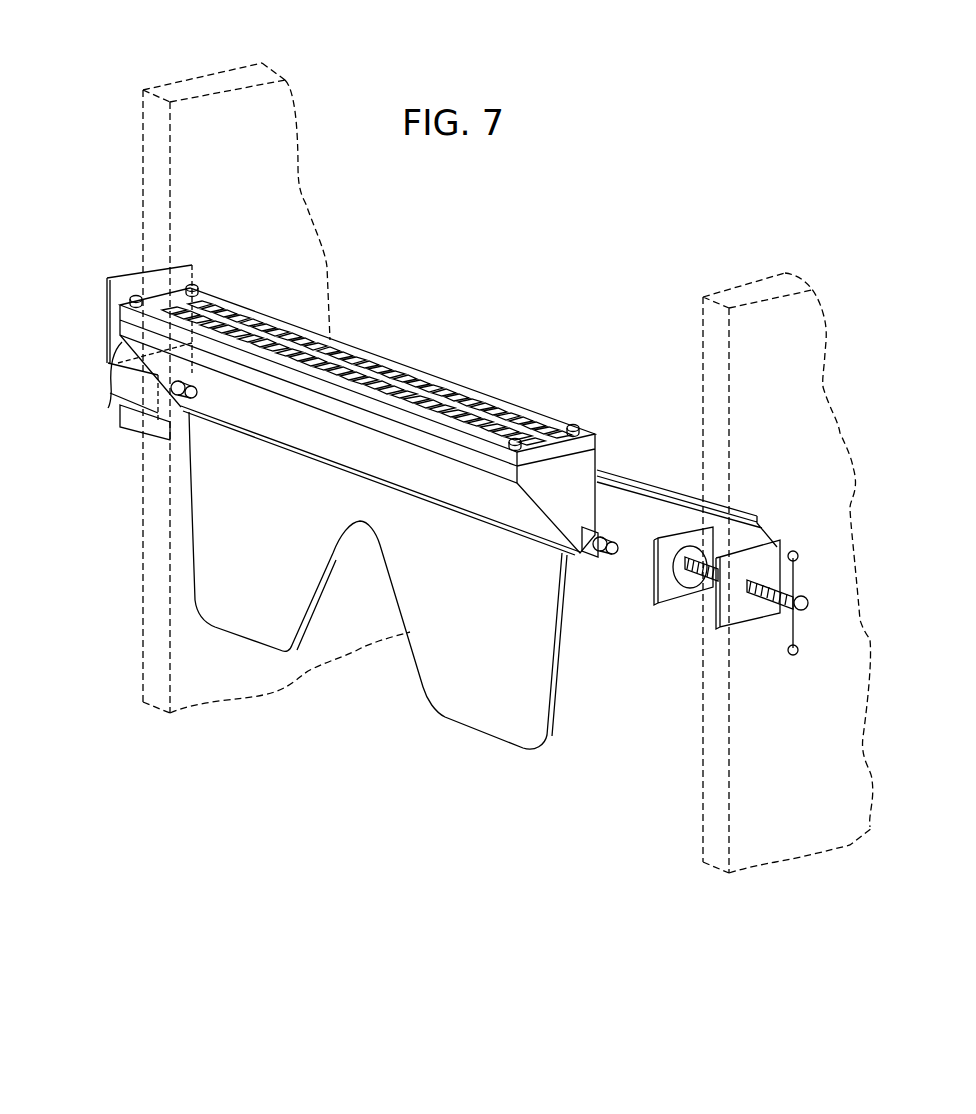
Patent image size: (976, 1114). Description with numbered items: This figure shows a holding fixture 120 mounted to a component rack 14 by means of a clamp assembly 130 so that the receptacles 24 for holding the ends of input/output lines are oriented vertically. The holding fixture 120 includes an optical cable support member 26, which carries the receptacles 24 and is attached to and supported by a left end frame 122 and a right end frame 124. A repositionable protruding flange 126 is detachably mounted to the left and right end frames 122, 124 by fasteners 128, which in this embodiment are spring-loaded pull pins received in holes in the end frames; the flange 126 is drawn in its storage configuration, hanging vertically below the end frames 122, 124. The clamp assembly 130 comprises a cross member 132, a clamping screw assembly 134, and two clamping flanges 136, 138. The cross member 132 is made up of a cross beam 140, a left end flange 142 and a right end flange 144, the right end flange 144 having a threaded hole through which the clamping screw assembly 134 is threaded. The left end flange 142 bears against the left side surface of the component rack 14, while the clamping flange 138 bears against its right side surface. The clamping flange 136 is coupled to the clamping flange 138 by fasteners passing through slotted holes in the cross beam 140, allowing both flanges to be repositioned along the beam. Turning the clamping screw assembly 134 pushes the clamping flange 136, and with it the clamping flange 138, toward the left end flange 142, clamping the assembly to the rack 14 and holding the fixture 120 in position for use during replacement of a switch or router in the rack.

The component rack 14 is at (200, 80).
The receptacles 24 is at (503, 400).
The optical cable support member 26 is at (262, 313).
The holding fixture 120 is at (522, 265).
The left end frame 122 is at (108, 408).
The right end frame 124 is at (568, 497).
The repositionable protruding flange 126 is at (262, 518).
The fasteners 128 is at (168, 415).
The clamp assembly 130 is at (762, 500).
The cross member 132 is at (92, 345).
The clamping screw assembly 134 is at (802, 612).
The clamping flange 136 is at (672, 604).
The clamping flange 138 is at (760, 525).
The cross beam 140 is at (604, 560).
The left end flange 142 is at (130, 272).
The right end flange 144 is at (750, 630).